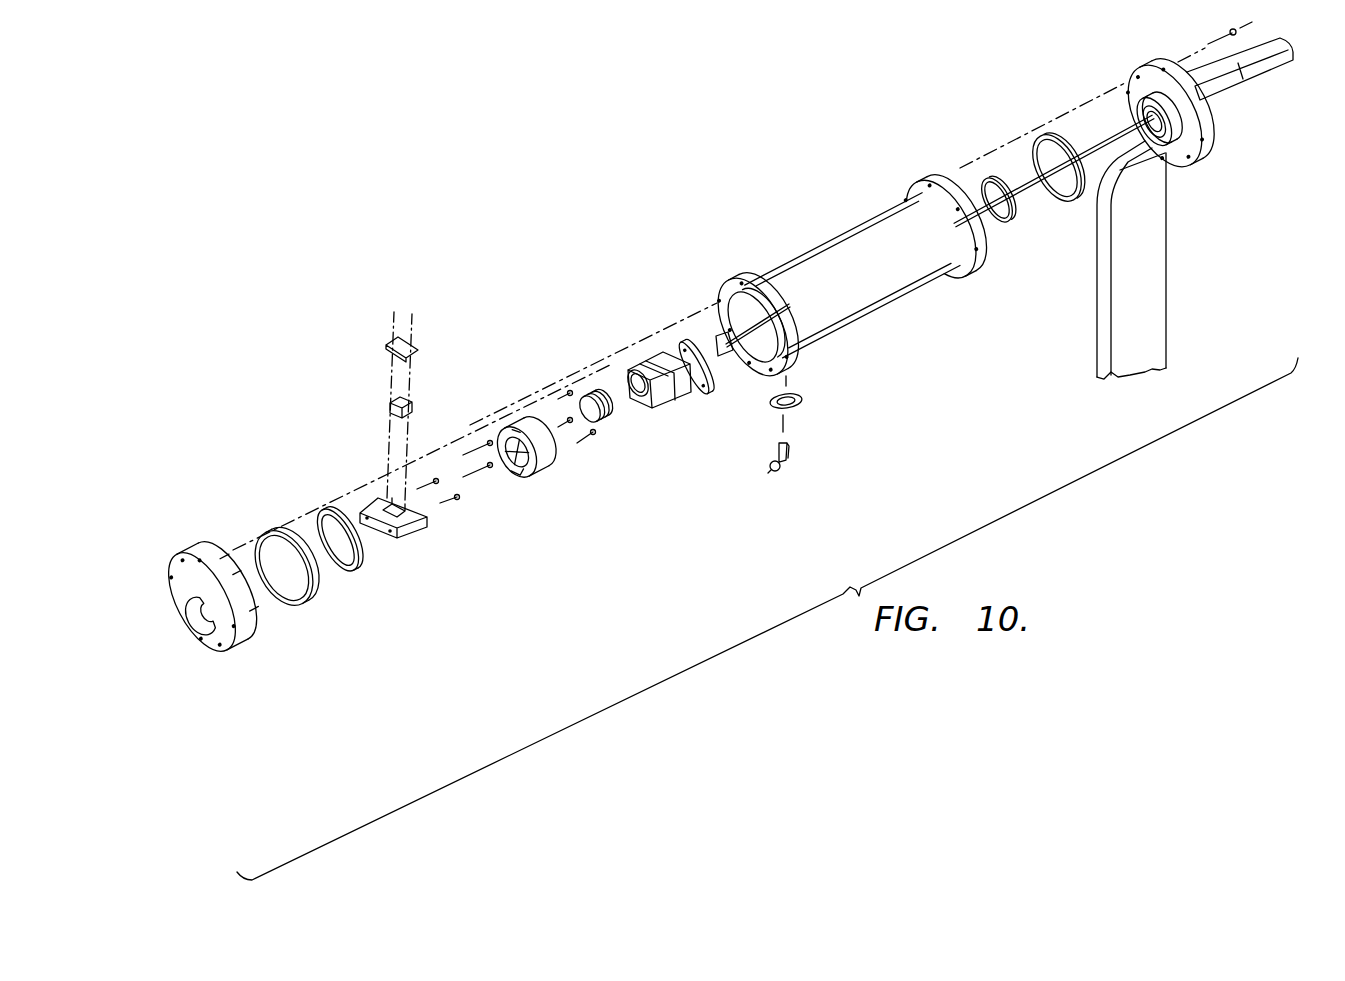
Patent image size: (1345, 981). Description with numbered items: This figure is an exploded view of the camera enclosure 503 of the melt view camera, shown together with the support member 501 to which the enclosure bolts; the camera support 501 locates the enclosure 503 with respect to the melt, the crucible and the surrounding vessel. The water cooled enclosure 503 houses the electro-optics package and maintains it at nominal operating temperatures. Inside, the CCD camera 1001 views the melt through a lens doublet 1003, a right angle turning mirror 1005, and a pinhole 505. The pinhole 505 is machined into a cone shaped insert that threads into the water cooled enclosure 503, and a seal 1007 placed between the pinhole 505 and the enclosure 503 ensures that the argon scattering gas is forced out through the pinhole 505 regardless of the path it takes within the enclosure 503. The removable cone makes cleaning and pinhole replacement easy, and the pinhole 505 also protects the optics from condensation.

The support member 501 is at (1145, 291).
The camera enclosure 503 is at (868, 235).
The pinhole 505 is at (778, 466).
The CCD camera 1001 is at (640, 362).
The lens doublet 1003 is at (588, 393).
The right angle turning mirror 1005 is at (413, 398).
The seal 1007 is at (802, 400).